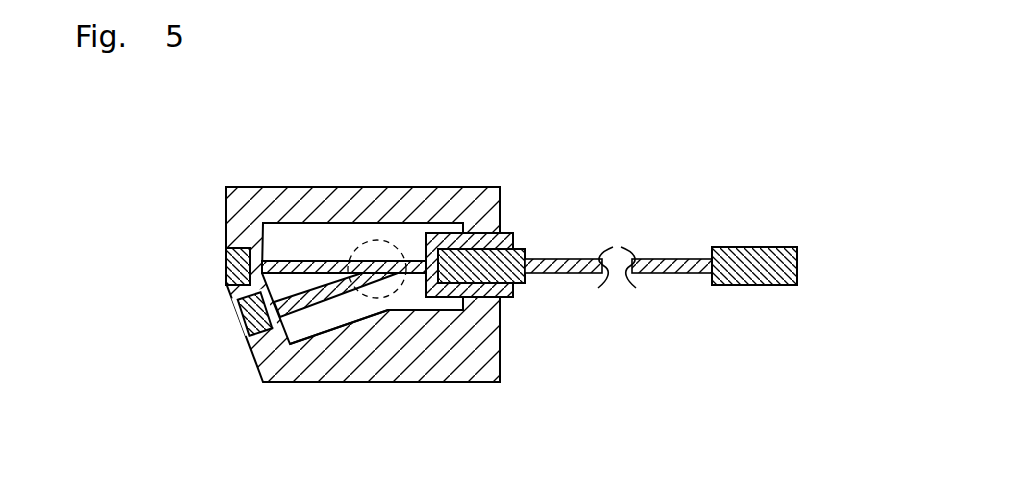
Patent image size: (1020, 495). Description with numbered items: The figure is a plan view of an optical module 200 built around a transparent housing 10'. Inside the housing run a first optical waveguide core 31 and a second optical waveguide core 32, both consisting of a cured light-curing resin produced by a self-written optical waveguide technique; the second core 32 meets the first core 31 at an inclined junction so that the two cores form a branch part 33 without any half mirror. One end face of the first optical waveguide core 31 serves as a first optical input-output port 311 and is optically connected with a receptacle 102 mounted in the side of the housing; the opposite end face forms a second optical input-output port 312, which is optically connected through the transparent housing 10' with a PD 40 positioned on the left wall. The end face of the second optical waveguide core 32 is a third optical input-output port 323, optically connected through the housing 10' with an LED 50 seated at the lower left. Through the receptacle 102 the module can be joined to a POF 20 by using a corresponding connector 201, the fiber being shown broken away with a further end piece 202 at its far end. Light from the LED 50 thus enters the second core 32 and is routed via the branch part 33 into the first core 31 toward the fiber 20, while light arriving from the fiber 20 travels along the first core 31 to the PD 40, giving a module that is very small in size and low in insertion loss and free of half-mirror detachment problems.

The optical module 200 is at (675, 112).
The transparent housing 10' is at (393, 299).
The first optical waveguide core 31 is at (322, 262).
The first optical input-output port 311 is at (423, 259).
The second optical input-output port 312 is at (266, 262).
The second optical waveguide core 32 is at (325, 292).
The third optical input-output port 323 is at (302, 340).
The branch part 33 is at (398, 290).
The PD 40 is at (238, 263).
The LED 50 is at (243, 327).
The receptacle 102 is at (505, 234).
The connector 201 is at (500, 263).
The second ferrule 202 is at (748, 263).
The POF 20 is at (650, 272).